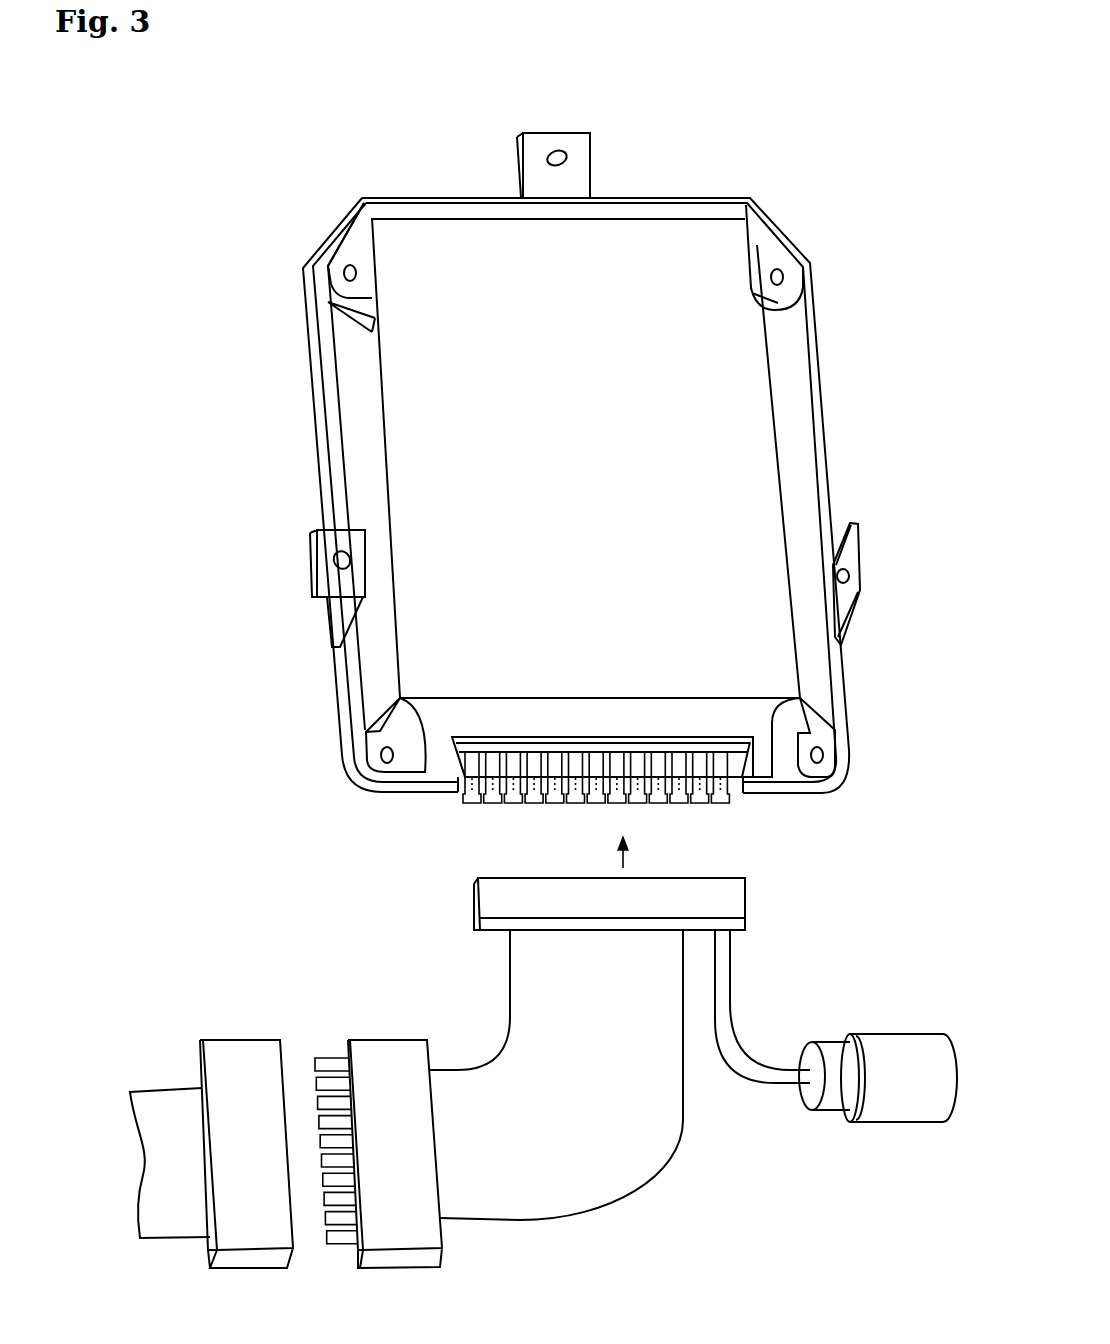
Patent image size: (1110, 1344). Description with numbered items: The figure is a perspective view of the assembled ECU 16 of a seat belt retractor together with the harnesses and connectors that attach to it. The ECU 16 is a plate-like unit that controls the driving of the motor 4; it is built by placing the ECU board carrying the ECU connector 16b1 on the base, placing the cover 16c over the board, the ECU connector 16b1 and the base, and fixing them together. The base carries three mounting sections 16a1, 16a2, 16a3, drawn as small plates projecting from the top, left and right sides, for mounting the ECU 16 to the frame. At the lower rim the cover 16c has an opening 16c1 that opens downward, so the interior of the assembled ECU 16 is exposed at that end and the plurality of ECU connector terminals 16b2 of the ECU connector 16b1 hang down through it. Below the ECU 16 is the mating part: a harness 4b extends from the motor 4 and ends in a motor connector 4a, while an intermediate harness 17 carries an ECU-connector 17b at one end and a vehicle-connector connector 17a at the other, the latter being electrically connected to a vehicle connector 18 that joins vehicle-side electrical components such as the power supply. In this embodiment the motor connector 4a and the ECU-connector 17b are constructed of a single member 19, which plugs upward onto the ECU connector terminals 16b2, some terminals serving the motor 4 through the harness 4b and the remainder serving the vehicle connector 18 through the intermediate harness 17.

The ECU 16 is at (813, 228).
The mounting section 16a1 is at (578, 157).
The mounting section 16a2 is at (323, 570).
The mounting section 16a3 is at (858, 600).
The ECU connector 16b1 is at (610, 705).
The ECU connector terminals 16b2 is at (705, 828).
The cover 16c is at (780, 435).
The opening 16c1 is at (742, 780).
The single member 19 is at (475, 893).
The motor connector 4a is at (727, 902).
The harness 4b is at (723, 1002).
The motor 4 is at (885, 1045).
The intermediate harness 17 is at (623, 1135).
The vehicle-connector connector 17a is at (408, 1233).
The ECU-connector 17b is at (555, 902).
The vehicle connector 18 is at (258, 1232).